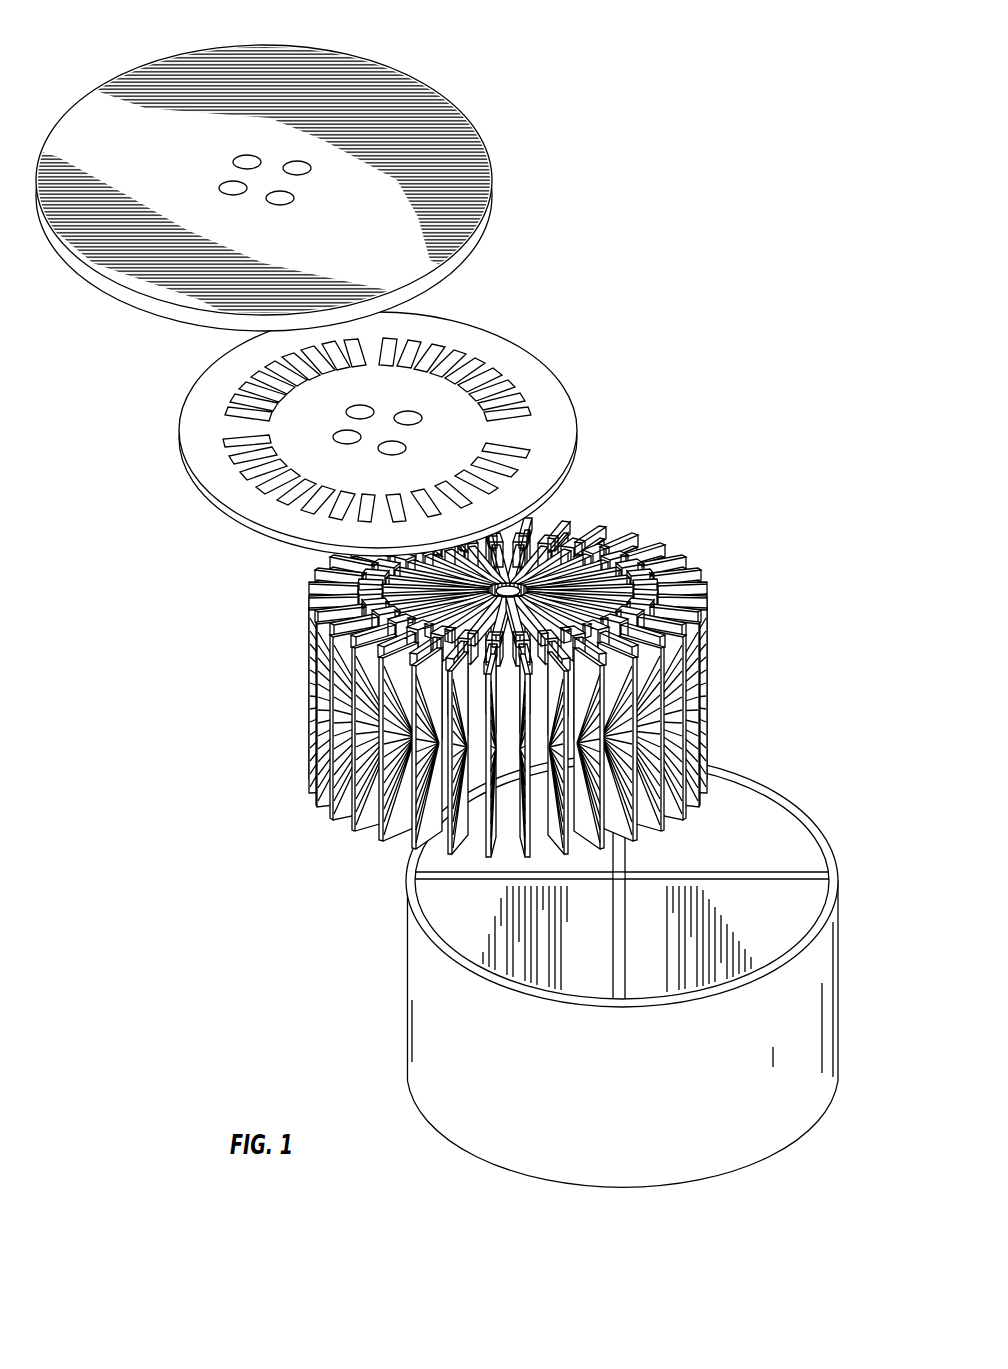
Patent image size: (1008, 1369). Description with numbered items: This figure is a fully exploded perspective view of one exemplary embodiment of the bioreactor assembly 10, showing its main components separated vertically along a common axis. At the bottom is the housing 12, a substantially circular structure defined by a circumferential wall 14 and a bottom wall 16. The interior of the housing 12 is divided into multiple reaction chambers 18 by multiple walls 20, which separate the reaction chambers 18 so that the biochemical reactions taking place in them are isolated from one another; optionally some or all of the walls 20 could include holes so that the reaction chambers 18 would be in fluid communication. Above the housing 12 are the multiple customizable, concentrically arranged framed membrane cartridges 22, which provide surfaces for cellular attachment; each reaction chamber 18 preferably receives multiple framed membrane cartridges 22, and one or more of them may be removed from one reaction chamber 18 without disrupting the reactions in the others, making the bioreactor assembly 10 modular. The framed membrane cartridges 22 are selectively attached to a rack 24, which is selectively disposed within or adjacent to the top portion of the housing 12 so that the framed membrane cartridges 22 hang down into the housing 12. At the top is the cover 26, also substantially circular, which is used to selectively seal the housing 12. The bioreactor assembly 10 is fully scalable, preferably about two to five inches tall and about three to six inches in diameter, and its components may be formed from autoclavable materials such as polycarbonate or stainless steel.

The bioreactor assembly 10 is at (613, 245).
The housing 12 is at (563, 933).
The circumferential wall 14 is at (733, 792).
The bottom wall 16 is at (814, 1161).
The reaction chambers 18 is at (473, 922).
The walls 20 is at (470, 855).
The framed membrane cartridges 22 is at (632, 512).
The rack 24 is at (526, 354).
The cover 26 is at (417, 97).